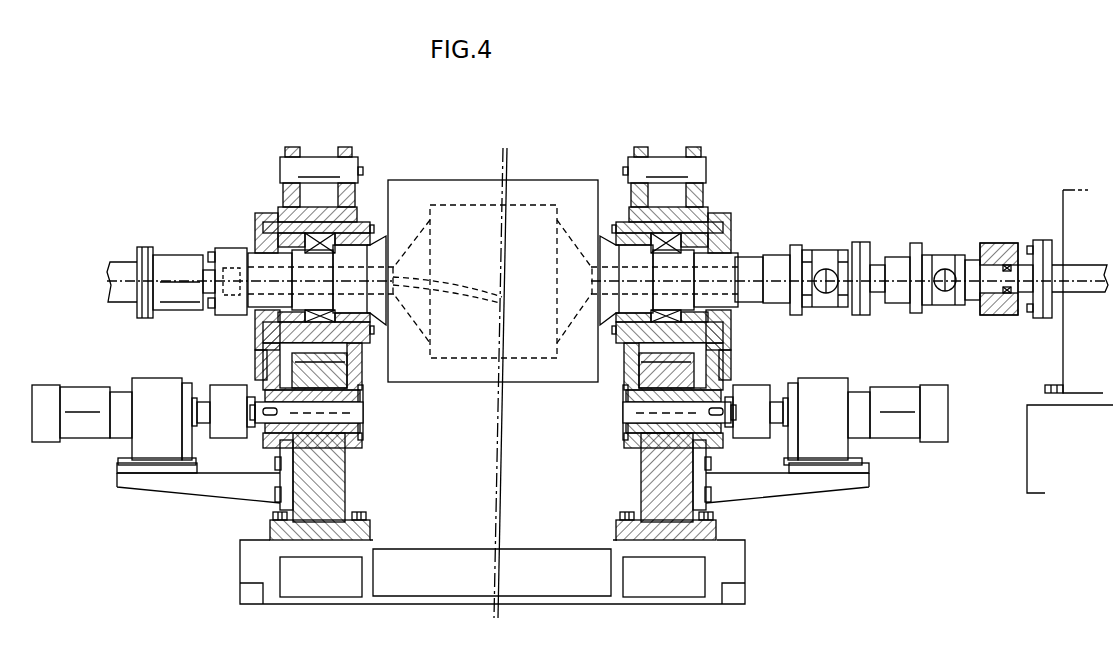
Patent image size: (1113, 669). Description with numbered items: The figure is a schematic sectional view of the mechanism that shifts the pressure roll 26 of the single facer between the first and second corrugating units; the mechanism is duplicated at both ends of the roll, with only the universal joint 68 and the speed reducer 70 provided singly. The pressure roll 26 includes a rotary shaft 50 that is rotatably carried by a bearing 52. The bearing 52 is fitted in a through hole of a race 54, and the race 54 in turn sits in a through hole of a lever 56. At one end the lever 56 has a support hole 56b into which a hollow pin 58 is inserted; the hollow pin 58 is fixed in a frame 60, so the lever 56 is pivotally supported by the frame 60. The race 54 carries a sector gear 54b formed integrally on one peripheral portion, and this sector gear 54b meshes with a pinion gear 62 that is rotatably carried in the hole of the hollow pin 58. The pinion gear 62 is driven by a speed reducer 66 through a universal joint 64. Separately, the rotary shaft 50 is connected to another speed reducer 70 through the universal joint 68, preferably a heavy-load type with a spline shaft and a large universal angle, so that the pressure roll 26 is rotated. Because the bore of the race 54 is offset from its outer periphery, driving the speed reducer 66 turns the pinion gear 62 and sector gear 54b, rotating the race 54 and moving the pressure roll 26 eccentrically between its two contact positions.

The pressure roll 26 is at (560, 180).
The rotary shaft 50 is at (296, 262).
The bearing 52 is at (282, 210).
The race 54 is at (263, 214).
The sector gear 54b is at (263, 355).
The lever 56 is at (358, 210).
The support hole 56b is at (362, 405).
The hollow pin 58 is at (362, 430).
The frame 60 is at (342, 492).
The pinion gear 62 is at (272, 438).
The universal joint 64 is at (220, 395).
The speed reducer 66 is at (152, 385).
The universal joint 68 is at (828, 255).
The speed reducer 70 is at (1063, 207).